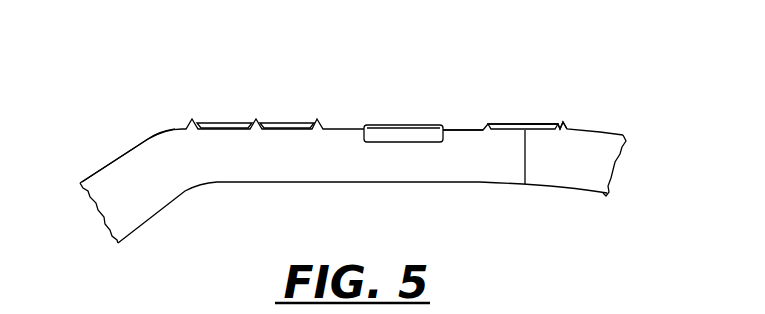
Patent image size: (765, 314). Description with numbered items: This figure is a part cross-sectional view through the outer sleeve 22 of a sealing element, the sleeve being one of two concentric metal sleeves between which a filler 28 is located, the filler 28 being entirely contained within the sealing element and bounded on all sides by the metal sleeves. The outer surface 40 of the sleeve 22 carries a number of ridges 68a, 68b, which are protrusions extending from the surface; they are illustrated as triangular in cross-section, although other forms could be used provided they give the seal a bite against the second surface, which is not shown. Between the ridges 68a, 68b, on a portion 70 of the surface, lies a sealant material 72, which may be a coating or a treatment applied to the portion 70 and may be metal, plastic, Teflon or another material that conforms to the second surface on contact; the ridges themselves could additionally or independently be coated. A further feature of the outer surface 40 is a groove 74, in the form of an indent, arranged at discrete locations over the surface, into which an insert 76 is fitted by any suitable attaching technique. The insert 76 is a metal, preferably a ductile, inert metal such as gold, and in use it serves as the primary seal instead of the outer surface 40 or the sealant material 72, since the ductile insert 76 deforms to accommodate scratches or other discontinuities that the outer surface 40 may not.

The outer sleeve 22 is at (603, 141).
The filler 28 is at (358, 225).
The outer surface 40 is at (143, 143).
The ridge 68a is at (488, 127).
The ridge 68b is at (561, 126).
The portion of the surface 70 is at (525, 184).
The sealant material 72 is at (540, 126).
The groove 74 is at (457, 130).
The insert 76 is at (401, 130).